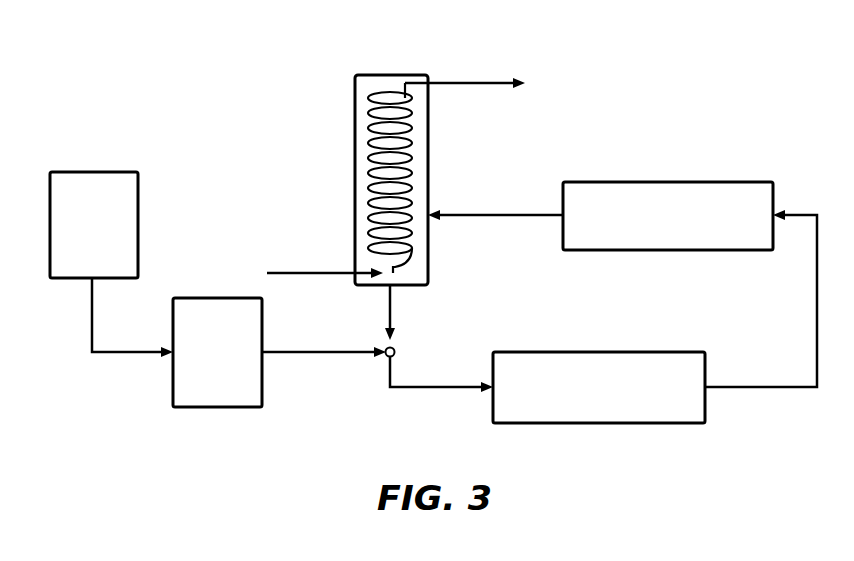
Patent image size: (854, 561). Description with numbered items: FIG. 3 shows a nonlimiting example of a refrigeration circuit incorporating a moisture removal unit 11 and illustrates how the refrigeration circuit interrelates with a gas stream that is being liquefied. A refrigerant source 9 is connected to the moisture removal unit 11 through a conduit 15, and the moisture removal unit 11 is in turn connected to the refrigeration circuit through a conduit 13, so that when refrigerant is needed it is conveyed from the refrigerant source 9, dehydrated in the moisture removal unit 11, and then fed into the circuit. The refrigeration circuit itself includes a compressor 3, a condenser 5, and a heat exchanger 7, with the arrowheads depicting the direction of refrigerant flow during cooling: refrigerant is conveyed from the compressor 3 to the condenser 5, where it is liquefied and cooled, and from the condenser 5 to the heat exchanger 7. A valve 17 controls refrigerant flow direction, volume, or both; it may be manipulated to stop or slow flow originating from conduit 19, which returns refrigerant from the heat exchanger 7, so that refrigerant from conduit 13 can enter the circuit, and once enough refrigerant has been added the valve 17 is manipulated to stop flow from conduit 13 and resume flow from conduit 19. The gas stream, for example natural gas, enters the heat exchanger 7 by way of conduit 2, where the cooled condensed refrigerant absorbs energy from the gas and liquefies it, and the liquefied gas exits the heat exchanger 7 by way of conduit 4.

The conduit 2 is at (310, 270).
The compressor 3 is at (599, 387).
The conduit 4 is at (459, 82).
The condenser 5 is at (622, 284).
The heat exchanger 7 is at (420, 148).
The refrigerant source 9 is at (94, 225).
The moisture removal unit 11 is at (217, 352).
The conduit 13 is at (307, 356).
The conduit 15 is at (120, 355).
The valve 17 is at (396, 350).
The conduit 19 is at (388, 307).